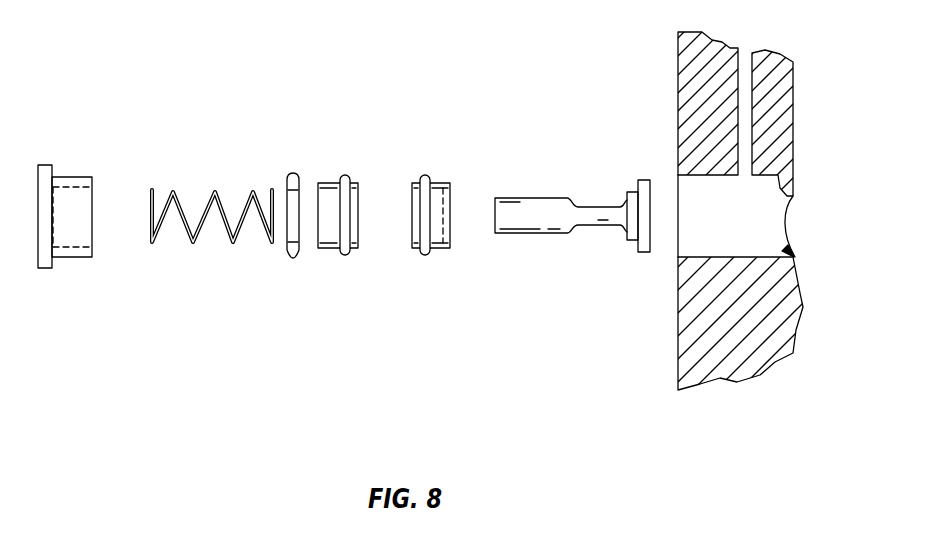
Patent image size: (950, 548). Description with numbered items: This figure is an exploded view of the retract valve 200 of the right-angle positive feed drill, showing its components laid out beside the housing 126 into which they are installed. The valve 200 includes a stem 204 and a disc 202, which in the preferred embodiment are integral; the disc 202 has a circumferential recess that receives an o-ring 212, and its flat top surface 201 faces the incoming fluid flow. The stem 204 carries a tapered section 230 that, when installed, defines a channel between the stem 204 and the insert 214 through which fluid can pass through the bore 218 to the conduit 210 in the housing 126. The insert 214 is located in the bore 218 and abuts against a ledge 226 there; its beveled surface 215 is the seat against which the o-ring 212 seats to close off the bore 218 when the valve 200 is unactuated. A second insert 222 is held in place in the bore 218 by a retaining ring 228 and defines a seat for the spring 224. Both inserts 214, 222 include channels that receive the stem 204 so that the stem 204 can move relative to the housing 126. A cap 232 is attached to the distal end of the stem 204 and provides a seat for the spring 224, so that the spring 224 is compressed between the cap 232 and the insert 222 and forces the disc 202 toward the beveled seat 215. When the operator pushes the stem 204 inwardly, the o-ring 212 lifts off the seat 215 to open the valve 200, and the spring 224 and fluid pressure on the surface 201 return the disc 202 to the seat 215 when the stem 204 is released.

The valve 200 is at (650, 122).
The cap 232 is at (63, 257).
The spring 224 is at (192, 245).
The retaining ring 228 is at (293, 258).
The second insert 222 is at (330, 248).
The beveled surface 215 is at (450, 243).
The insert 214 is at (438, 193).
The stem 204 is at (530, 233).
The tapered section 230 is at (593, 225).
The disc 202 is at (627, 203).
The o-ring 212 is at (633, 192).
The flat top surface 201 is at (652, 227).
The housing 126 is at (760, 350).
The conduit 210 is at (745, 116).
The ledge 226 is at (787, 200).
The bore 218 is at (793, 256).